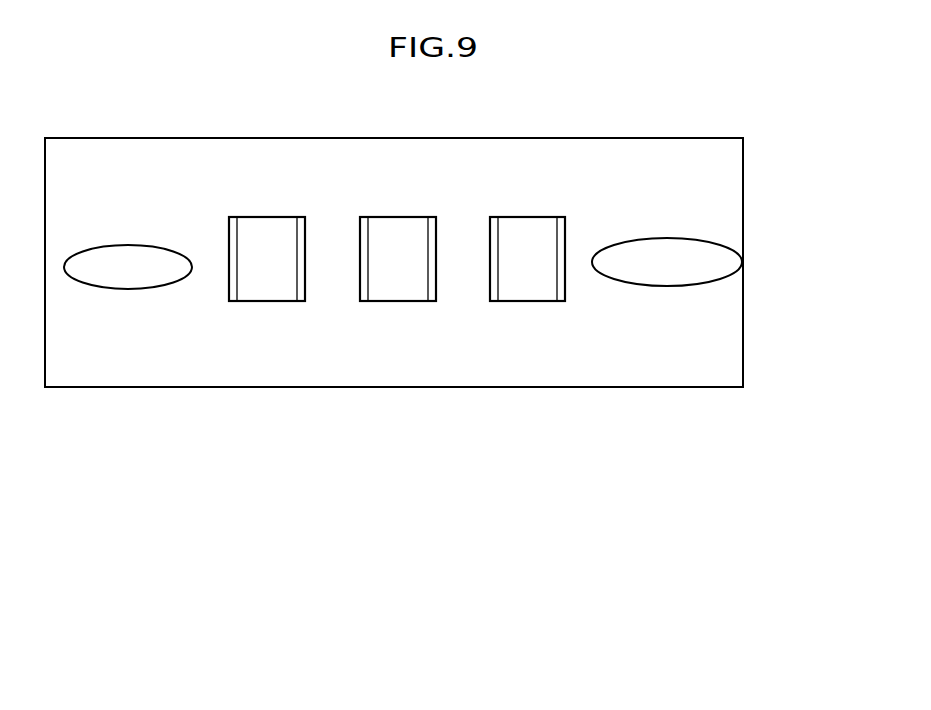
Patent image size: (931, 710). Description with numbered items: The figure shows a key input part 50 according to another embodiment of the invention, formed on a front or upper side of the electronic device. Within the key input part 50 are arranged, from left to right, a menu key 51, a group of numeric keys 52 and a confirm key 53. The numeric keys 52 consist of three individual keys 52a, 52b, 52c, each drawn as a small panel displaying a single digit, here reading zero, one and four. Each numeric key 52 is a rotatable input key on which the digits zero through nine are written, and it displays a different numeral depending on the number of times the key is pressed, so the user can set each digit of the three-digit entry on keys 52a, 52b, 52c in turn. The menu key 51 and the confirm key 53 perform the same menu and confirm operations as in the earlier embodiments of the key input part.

The key input part 50 is at (743, 203).
The menu key 51 is at (127, 289).
The numeric key 52 is at (400, 378).
The numeric key 52a is at (267, 302).
The numeric key 52b is at (398, 302).
The numeric key 52c is at (531, 338).
The confirm key 53 is at (665, 287).